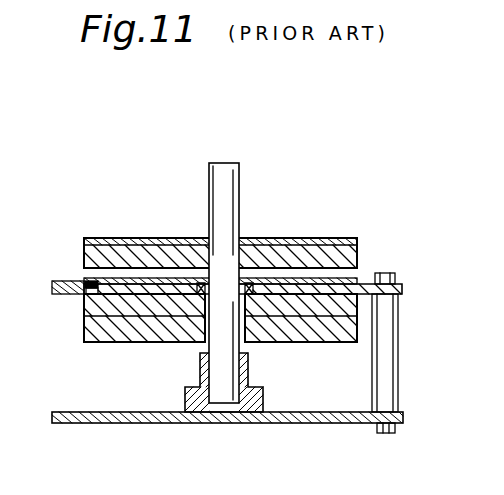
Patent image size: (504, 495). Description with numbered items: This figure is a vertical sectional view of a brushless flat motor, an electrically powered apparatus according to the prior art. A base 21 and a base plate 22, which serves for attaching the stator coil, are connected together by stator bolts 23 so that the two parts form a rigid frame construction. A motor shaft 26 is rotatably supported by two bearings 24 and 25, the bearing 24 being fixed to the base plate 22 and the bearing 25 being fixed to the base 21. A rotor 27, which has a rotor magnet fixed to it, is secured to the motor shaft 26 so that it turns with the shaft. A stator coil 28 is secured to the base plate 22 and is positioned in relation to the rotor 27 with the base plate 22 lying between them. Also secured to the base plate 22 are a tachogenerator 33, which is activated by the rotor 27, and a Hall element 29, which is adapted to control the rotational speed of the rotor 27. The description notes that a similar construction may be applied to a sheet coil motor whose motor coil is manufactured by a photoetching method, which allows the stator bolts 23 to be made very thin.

The base 21 is at (345, 424).
The base plate 22 is at (402, 289).
The stator bolts 23 is at (393, 350).
The bearing 24 is at (258, 286).
The bearing 25 is at (258, 413).
The motor shaft 26 is at (232, 179).
The rotor 27 is at (117, 238).
The stator coil 28 is at (85, 301).
The Hall element 29 is at (85, 283).
The tachogenerator 33 is at (152, 279).